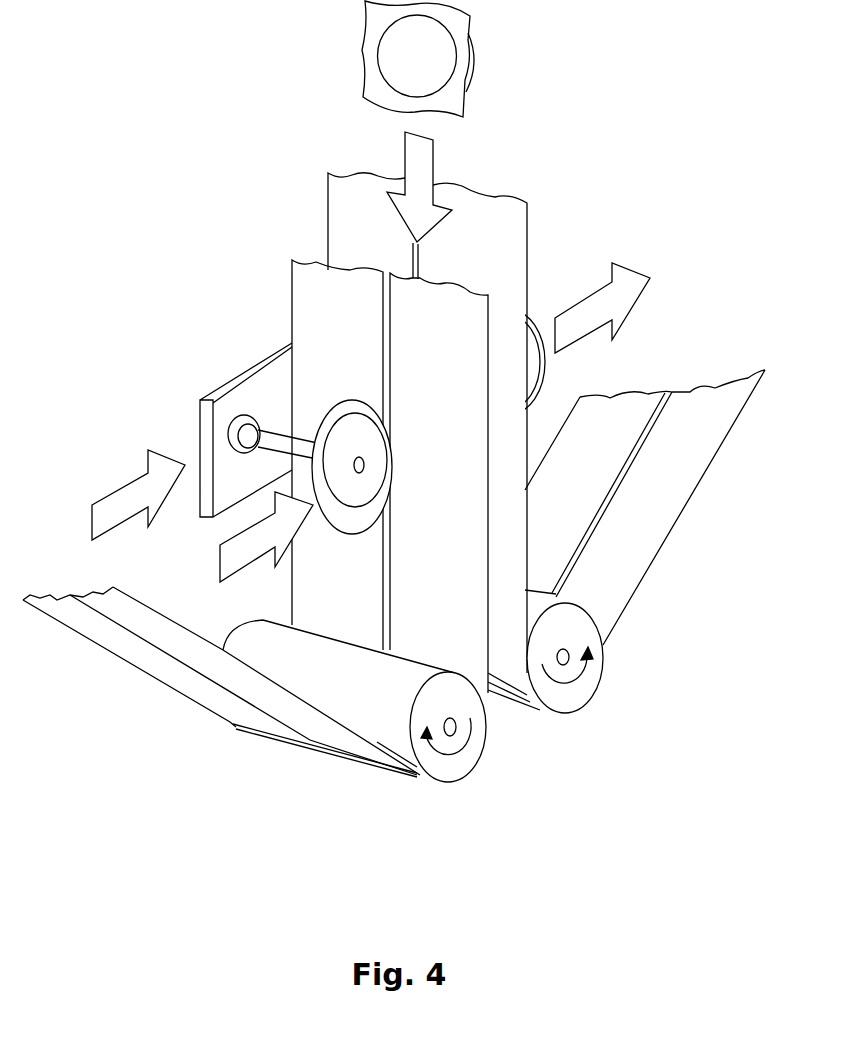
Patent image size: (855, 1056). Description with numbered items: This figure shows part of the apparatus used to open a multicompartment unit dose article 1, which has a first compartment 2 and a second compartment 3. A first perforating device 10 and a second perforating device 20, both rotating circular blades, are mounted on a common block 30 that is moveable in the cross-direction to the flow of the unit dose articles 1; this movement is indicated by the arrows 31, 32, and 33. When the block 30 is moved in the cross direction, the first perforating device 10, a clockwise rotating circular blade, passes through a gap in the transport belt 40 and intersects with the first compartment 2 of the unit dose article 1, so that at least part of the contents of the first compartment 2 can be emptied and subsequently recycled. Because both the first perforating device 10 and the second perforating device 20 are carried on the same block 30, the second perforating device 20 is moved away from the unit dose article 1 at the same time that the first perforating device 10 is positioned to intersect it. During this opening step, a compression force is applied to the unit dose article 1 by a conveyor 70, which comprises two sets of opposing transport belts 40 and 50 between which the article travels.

The multicompartment unit dose article 1 is at (340, 54).
The first compartment 2 is at (445, 62).
The second compartment 3 is at (477, 62).
The first perforating device 10 is at (362, 430).
The second perforating device 20 is at (528, 362).
The block 30 is at (252, 402).
The arrow 31 is at (118, 502).
The arrow 32 is at (233, 557).
The arrow 33 is at (623, 287).
The transport belt 40 is at (428, 627).
The transport belt 50 is at (527, 552).
The conveyor 70 is at (635, 694).